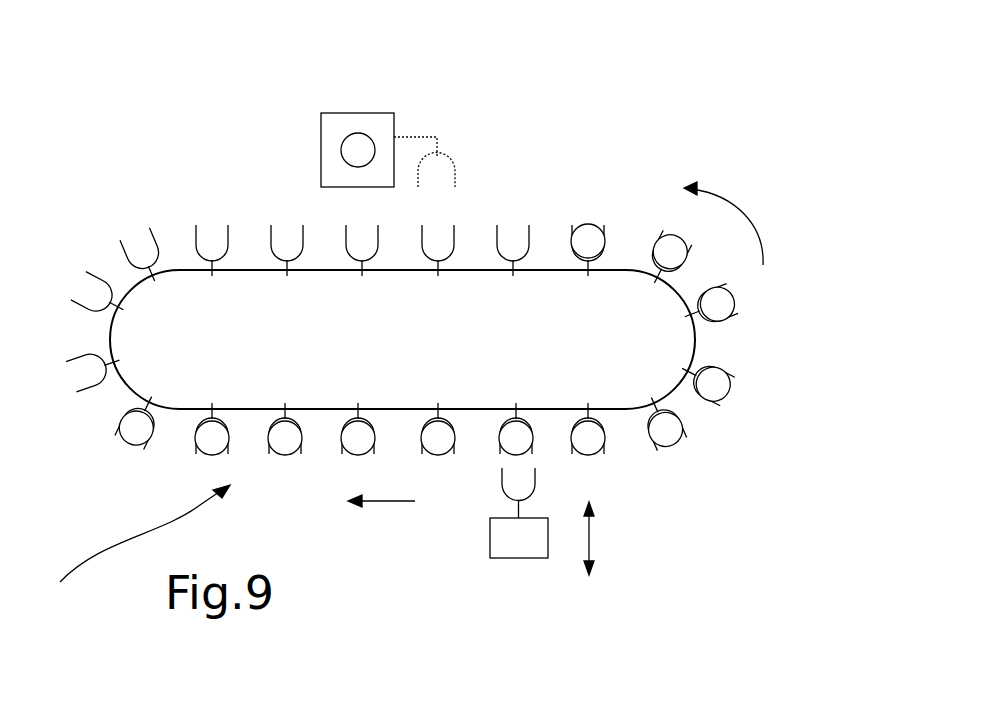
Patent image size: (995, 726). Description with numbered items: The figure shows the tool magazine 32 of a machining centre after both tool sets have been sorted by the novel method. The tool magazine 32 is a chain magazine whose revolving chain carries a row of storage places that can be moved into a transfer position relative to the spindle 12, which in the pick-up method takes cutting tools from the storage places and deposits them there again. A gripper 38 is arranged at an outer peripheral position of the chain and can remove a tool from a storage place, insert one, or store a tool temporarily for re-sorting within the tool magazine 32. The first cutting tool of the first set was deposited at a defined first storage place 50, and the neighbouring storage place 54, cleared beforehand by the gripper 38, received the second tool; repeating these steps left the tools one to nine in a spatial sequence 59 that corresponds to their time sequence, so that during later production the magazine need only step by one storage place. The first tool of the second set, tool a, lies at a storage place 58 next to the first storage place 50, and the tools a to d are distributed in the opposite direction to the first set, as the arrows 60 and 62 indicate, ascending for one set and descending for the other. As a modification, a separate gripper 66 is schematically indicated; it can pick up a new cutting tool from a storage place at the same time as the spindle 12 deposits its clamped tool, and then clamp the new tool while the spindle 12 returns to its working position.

The spindle 12 is at (370, 113).
The gripper 66 is at (455, 157).
The tool magazine 32 is at (723, 152).
The arrow 62 is at (747, 213).
The storage place 58 is at (735, 382).
The first storage place 50 is at (685, 438).
The storage place 54 is at (607, 452).
The spatial sequence 59 is at (136, 550).
The arrow 60 is at (395, 503).
The gripper 38 is at (520, 552).